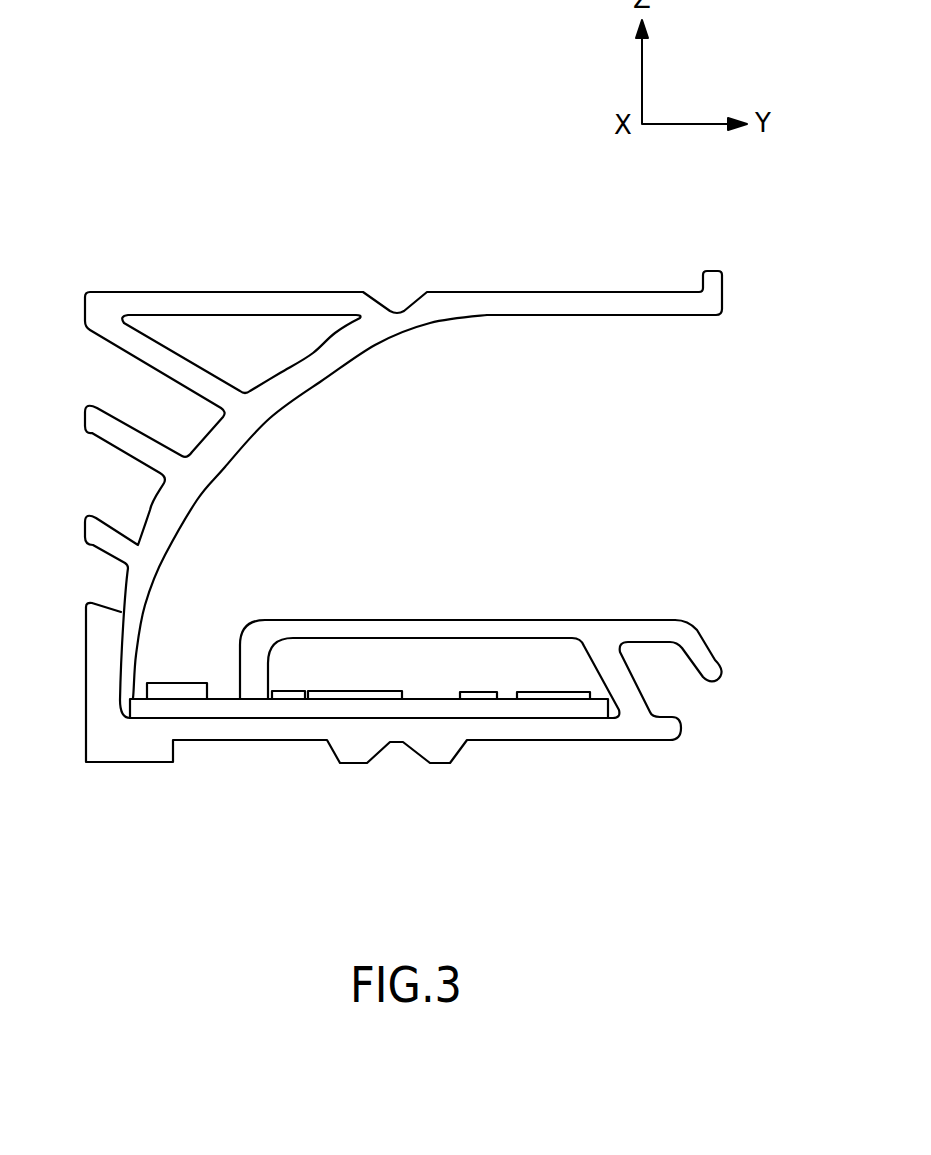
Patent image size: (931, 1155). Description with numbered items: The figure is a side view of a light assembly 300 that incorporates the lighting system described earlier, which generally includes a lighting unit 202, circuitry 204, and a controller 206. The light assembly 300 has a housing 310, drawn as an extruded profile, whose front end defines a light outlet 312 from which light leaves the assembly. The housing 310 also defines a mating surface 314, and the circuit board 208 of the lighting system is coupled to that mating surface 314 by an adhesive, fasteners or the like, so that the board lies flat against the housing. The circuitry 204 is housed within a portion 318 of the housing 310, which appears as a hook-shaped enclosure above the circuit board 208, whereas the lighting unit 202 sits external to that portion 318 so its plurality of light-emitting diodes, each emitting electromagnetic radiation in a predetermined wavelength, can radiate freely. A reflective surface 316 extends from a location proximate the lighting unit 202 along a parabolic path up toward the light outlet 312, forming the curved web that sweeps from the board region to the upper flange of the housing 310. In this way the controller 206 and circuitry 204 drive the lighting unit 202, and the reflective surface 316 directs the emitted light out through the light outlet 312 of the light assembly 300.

The light assembly 300 is at (138, 195).
The housing 310 is at (468, 303).
The light outlet 312 is at (745, 474).
The mating surface 314 is at (533, 720).
The reflective surface 316 is at (273, 413).
The portion of the housing 318 is at (538, 620).
The lighting unit 202 is at (163, 702).
The circuitry 204 is at (335, 710).
The controller 206 is at (220, 718).
The circuit board 208 is at (420, 708).